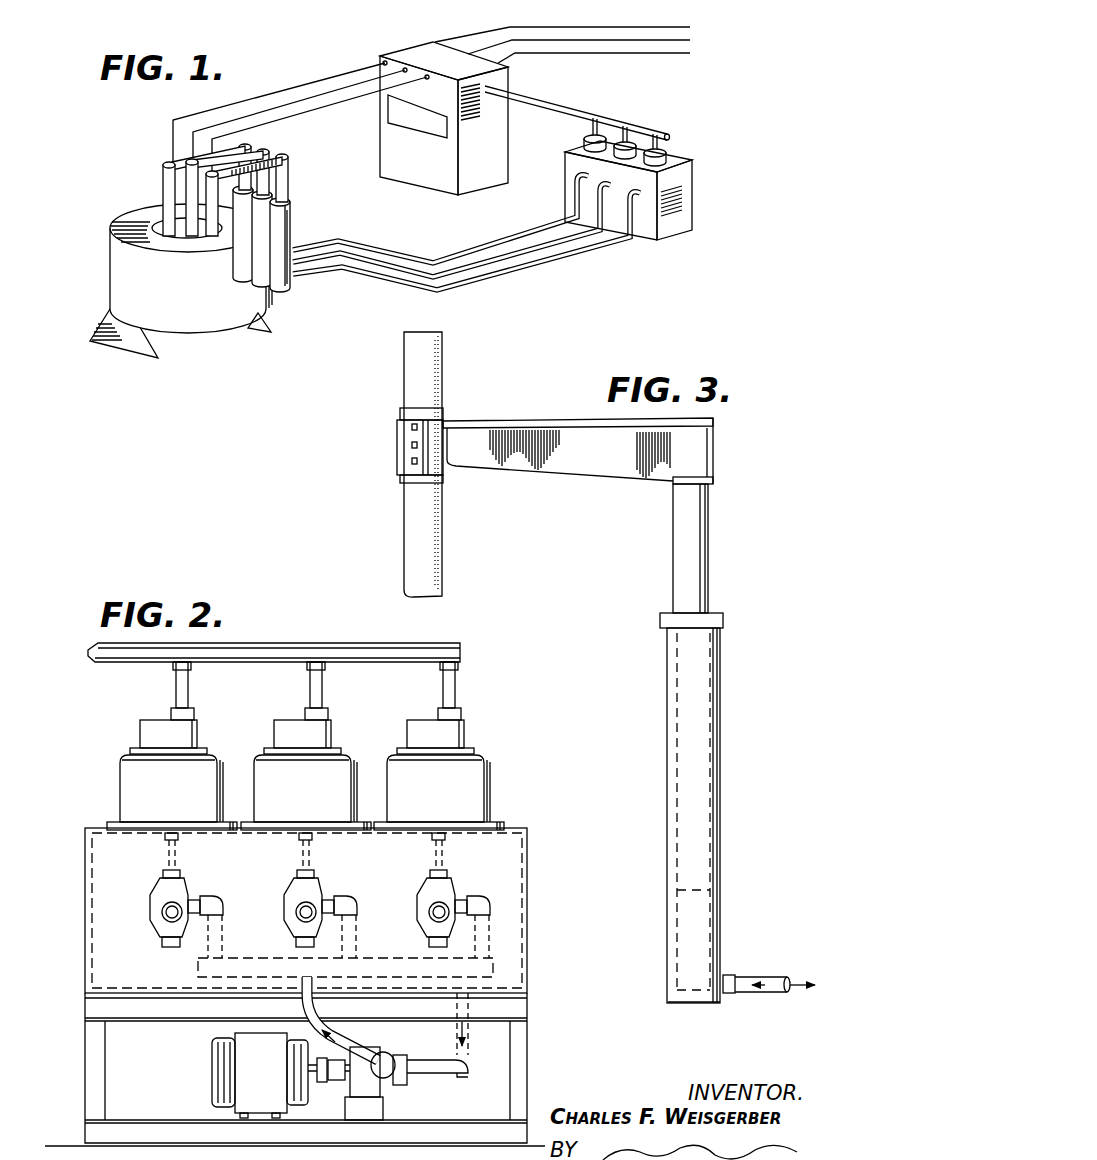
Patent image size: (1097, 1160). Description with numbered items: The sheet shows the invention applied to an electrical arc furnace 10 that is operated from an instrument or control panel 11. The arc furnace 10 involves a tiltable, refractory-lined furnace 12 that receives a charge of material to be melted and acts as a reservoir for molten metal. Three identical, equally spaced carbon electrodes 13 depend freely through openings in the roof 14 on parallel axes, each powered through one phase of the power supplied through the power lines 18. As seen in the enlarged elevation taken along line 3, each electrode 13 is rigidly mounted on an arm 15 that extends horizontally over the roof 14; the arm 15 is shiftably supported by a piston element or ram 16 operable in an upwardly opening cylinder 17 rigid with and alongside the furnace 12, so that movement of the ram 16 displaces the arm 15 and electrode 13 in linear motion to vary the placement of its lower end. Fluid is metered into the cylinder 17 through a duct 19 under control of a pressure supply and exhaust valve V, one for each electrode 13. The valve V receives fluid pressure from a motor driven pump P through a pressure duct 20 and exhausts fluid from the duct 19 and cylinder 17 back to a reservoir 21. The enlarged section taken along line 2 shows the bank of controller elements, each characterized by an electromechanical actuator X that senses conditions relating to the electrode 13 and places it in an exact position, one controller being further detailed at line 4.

In FIG. 1, the electrical arc furnace 10 is at (108, 280).
In FIG. 1, the control panel 11 is at (398, 149).
In FIG. 1, the tiltable furnace 12 is at (213, 322).
In FIG. 1, the electrode 13 is at (195, 195).
In FIG. 3, the electrode 13 is at (432, 555).
In FIG. 1, the roof 14 is at (124, 228).
In FIG. 1, the arm 15 is at (270, 173).
In FIG. 3, the arm 15 is at (565, 453).
In FIG. 1, the ram 16 is at (289, 190).
In FIG. 3, the ram 16 is at (700, 558).
In FIG. 1, the cylinder 17 is at (288, 229).
In FIG. 3, the cylinder 17 is at (717, 762).
In FIG. 1, the power lines 18 is at (352, 97).
In FIG. 1, the duct 19 is at (463, 247).
In FIG. 3, the duct 19 is at (773, 977).
In FIG. 2, the duct 19 is at (163, 913).
In FIG. 2, the pressure duct 20 is at (353, 1036).
In FIG. 2, the reservoir 21 is at (527, 955).
In FIG. 1, the section line 2– 2 is at (555, 148).
In FIG. 1, the section line 3– 3 is at (270, 128).
In FIG. 2, the section line 4– 4 is at (476, 688).
In FIG. 1, the electromechanical actuator X is at (633, 147).
In FIG. 2, the electromechanical actuator X is at (222, 760).
In FIG. 2, the valve V is at (188, 888).
In FIG. 2, the pump P is at (309, 1076).